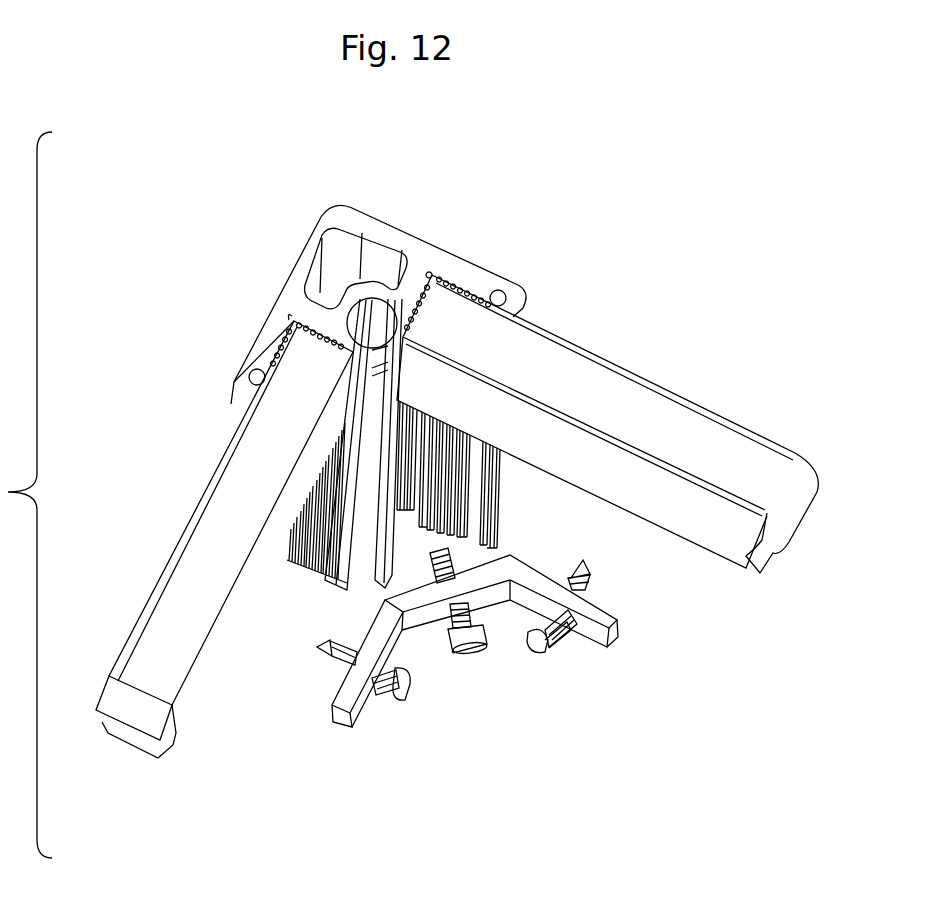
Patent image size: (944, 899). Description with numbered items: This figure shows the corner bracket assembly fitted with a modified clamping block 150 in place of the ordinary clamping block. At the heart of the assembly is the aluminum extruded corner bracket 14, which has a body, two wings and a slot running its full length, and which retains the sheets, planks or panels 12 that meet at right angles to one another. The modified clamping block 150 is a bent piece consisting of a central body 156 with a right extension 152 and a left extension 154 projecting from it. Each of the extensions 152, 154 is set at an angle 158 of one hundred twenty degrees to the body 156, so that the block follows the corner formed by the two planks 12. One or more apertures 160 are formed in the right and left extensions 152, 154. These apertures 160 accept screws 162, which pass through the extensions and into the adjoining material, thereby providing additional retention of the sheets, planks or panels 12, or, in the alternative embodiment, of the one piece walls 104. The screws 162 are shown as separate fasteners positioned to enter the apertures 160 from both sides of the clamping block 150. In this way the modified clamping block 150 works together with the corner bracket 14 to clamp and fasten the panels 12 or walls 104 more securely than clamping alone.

The plank 12 is at (713, 443).
The corner bracket 14 is at (428, 219).
The one piece wall 104 is at (174, 588).
The modified clamping block 150 is at (520, 675).
The right extension 152 is at (620, 625).
The left extension 154 is at (352, 693).
The body 156 is at (427, 617).
The angle 158 is at (417, 618).
The aperture 160 is at (567, 617).
The screw 162 is at (327, 650).